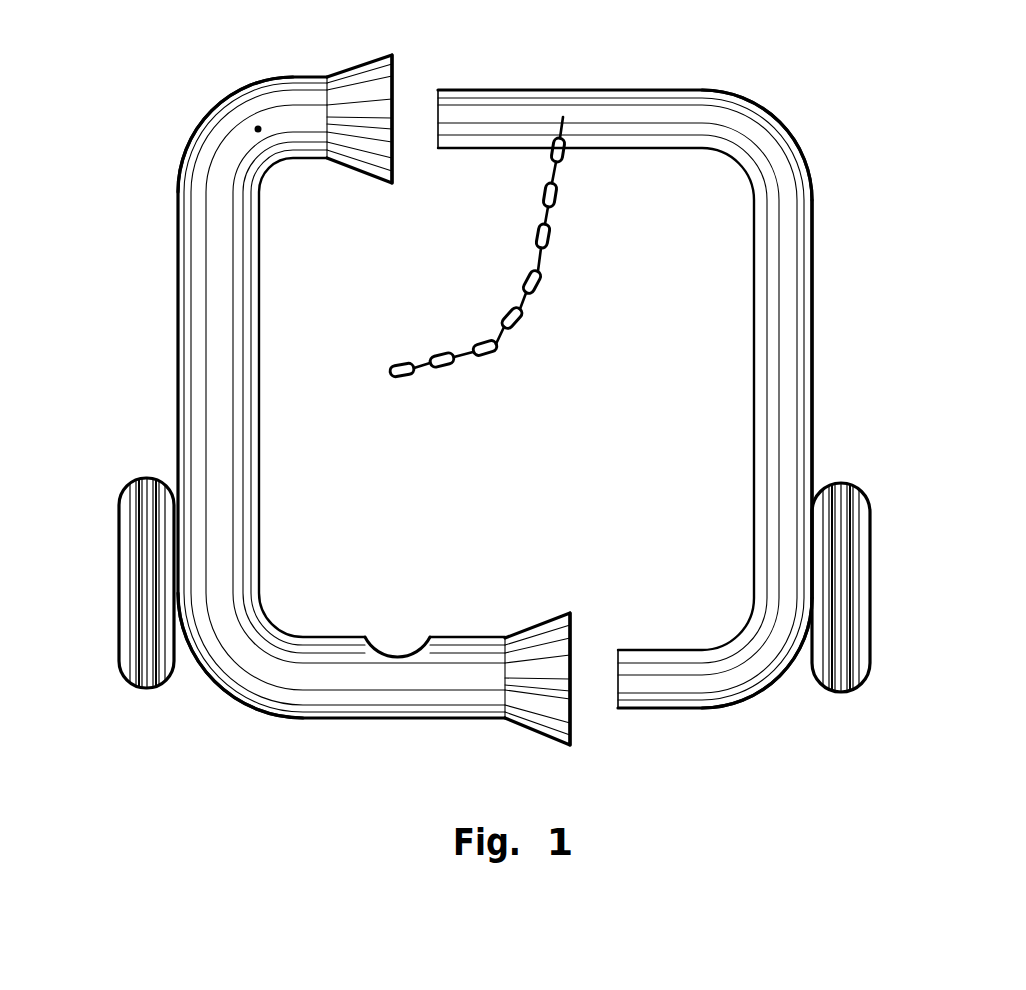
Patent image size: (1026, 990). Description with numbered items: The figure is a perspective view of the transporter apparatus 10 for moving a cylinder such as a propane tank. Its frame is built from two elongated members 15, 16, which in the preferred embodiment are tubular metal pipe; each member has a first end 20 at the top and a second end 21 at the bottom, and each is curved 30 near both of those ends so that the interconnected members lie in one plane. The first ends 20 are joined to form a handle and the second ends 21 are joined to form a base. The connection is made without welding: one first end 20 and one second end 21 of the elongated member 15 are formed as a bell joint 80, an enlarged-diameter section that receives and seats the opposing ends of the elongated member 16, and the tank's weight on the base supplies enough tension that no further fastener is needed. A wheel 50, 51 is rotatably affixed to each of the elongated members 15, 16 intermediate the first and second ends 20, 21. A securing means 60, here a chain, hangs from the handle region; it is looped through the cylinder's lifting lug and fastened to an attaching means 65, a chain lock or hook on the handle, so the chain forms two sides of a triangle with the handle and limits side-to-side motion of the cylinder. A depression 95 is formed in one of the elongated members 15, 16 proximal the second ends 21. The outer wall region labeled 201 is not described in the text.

The transporter apparatus 10 is at (150, 333).
The elongated member 15 is at (178, 407).
The elongated member 16 is at (811, 422).
The first end 20 is at (393, 57).
The second end 21 is at (618, 686).
The curve 30 is at (206, 119).
The wheel 50 is at (120, 645).
The wheel 51 is at (867, 587).
The securing means 60 is at (539, 283).
The attaching means 65 is at (258, 126).
The bell joint 80 is at (347, 72).
The depression 95 is at (395, 655).
The outer side wall of frame member 201 is at (812, 349).